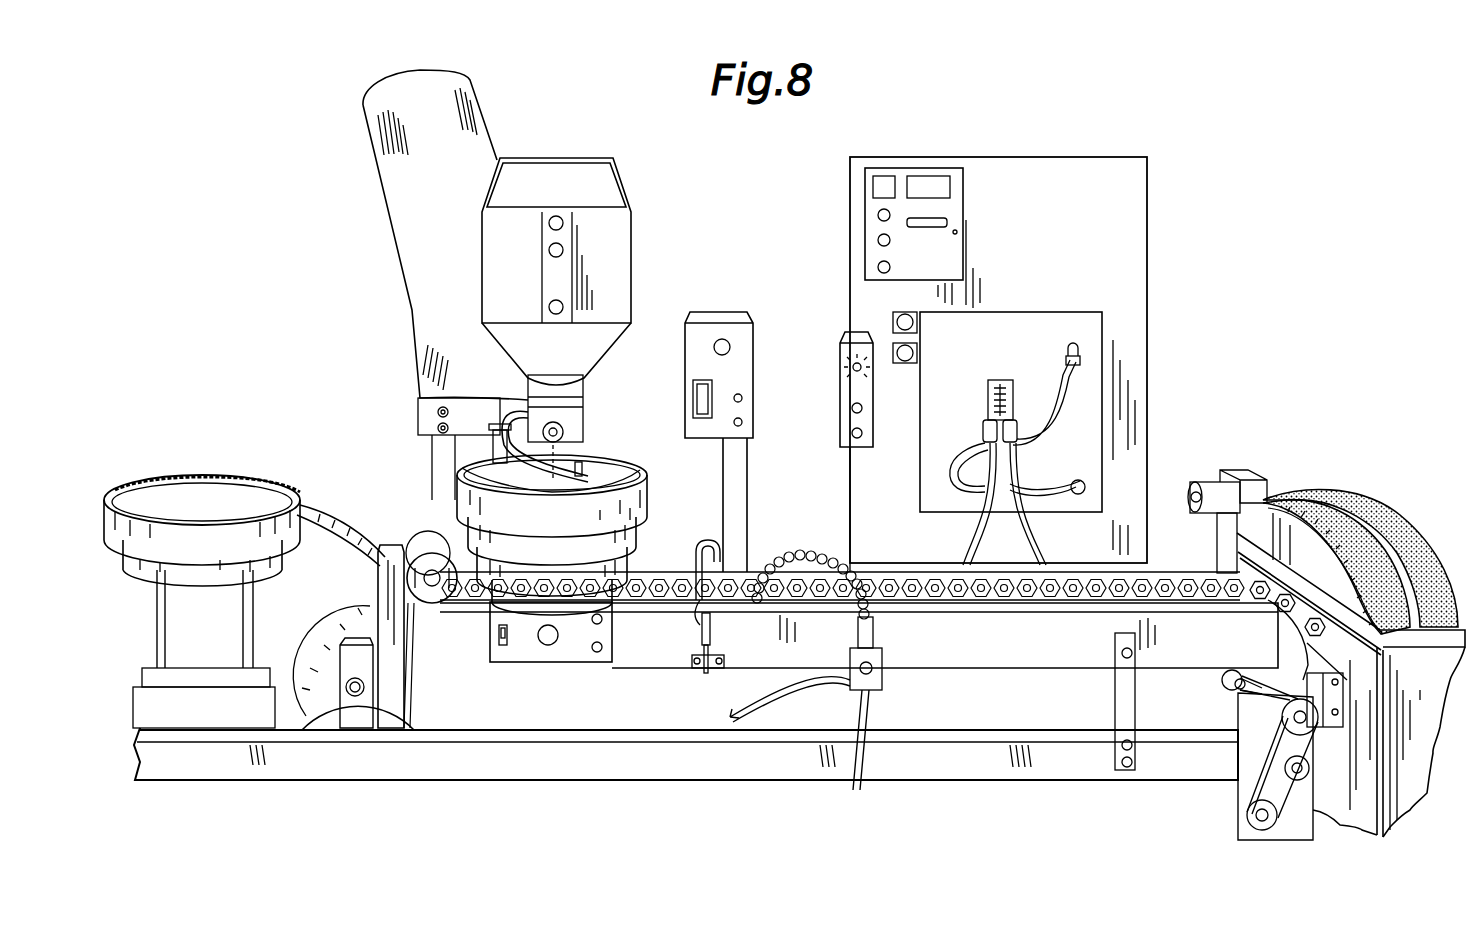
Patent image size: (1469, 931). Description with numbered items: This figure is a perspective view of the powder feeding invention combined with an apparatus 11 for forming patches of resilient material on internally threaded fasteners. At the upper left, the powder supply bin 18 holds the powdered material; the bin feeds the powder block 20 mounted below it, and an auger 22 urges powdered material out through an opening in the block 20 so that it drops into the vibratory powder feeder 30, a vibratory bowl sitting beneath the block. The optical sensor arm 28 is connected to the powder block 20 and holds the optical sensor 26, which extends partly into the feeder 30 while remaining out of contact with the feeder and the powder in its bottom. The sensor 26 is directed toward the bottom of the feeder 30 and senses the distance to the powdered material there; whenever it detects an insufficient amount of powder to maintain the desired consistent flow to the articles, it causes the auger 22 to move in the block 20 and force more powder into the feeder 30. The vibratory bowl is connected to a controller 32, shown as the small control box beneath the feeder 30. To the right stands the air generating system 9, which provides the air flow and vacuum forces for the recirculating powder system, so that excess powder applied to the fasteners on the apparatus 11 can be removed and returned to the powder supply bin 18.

The air generating system 9 is at (1057, 227).
The apparatus for forming patches of resilient material on internally threaded faste 11 is at (642, 800).
The powder supply bin 18 is at (622, 256).
The powder block 20 is at (565, 425).
The auger 22 is at (553, 422).
The optical sensor 26 is at (582, 468).
The optical sensor arm 28 is at (557, 467).
The vibratory powder feeder 30 is at (607, 578).
The controller 32 is at (548, 646).